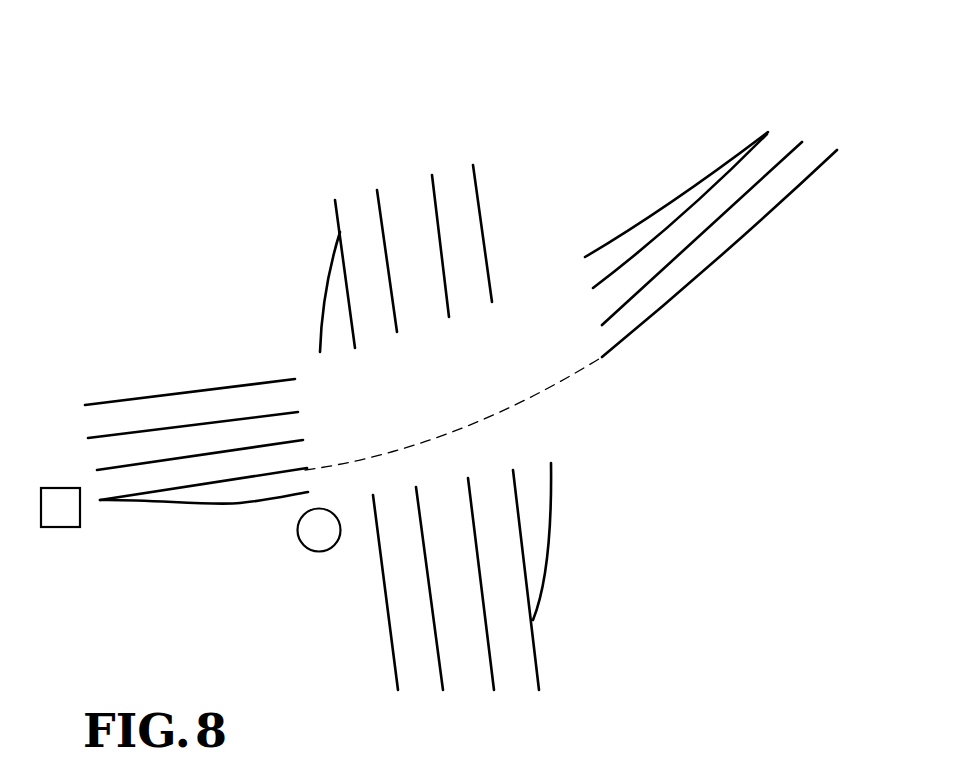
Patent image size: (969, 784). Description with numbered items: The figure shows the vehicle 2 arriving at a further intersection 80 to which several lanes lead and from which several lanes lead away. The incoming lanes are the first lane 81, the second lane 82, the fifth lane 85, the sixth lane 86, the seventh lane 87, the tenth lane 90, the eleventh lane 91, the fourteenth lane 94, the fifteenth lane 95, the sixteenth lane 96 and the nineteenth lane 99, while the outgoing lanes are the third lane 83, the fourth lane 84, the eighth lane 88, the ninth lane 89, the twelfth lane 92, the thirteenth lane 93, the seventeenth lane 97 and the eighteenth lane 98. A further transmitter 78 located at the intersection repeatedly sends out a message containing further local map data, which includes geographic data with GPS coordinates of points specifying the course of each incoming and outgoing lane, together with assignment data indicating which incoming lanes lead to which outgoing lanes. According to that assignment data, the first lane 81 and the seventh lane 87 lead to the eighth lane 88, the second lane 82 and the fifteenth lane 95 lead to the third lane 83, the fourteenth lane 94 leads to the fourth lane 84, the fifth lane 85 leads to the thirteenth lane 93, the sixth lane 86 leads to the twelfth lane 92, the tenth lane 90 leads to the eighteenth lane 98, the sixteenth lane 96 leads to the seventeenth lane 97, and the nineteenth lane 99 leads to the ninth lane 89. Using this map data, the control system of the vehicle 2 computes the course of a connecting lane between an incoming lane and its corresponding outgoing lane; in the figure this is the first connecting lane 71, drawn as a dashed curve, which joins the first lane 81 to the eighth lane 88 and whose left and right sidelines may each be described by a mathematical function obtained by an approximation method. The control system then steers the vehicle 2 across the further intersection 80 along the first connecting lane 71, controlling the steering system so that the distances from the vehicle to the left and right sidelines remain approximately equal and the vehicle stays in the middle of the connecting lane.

The further intersection 80 is at (618, 88).
The first connecting lane 71 is at (566, 378).
The vehicle 2 is at (62, 507).
The further transmitter 78 is at (320, 533).
The first lane 81 is at (118, 503).
The second lane 82 is at (247, 502).
The third lane 83 is at (388, 638).
The fourth lane 84 is at (442, 668).
The fifth lane 85 is at (497, 673).
The sixth lane 86 is at (540, 660).
The seventh lane 87 is at (550, 557).
The eighth lane 88 is at (640, 330).
The ninth lane 89 is at (797, 155).
The tenth lane 90 is at (747, 162).
The eleventh lane 91 is at (632, 233).
The twelfth lane 92 is at (482, 198).
The thirteenth lane 93 is at (435, 192).
The fourteenth lane 94 is at (382, 215).
The fifteenth lane 95 is at (342, 247).
The sixteenth lane 96 is at (325, 287).
The seventeenth lane 97 is at (218, 390).
The eighteenth lane 98 is at (100, 435).
The nineteenth lane 99 is at (118, 465).